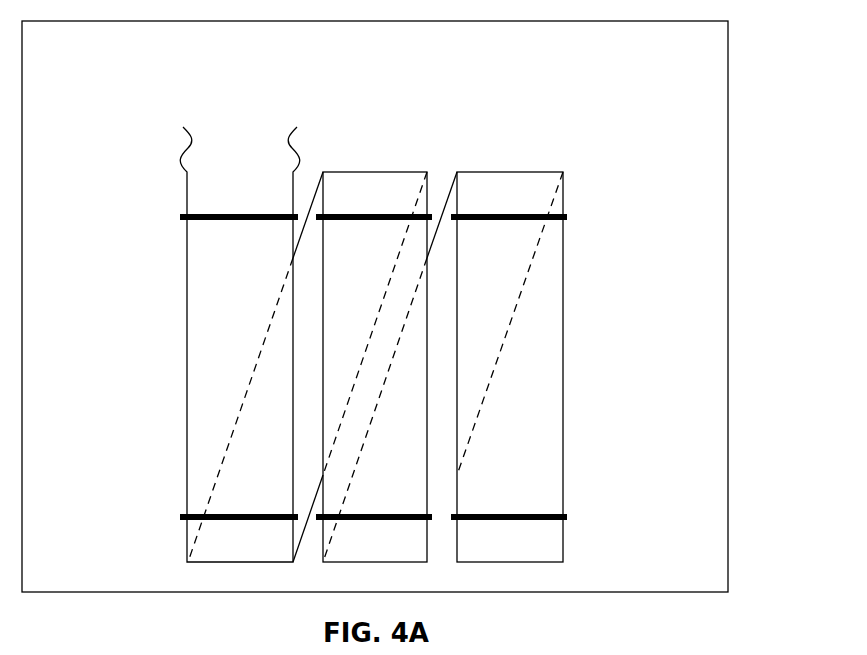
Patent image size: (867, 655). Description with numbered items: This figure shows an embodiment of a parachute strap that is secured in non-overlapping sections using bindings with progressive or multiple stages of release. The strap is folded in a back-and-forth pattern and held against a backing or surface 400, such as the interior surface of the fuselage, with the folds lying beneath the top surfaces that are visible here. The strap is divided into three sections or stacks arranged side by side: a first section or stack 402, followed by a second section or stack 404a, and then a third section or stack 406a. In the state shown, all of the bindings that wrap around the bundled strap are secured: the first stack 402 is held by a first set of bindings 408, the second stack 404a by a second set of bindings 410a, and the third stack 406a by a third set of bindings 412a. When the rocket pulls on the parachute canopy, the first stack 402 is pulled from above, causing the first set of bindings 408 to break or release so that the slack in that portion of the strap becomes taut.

The backing or surface 400 is at (728, 313).
The first section or stack 402 is at (187, 360).
The second section or stack 404a is at (345, 171).
The third section or stack 406a is at (563, 358).
The first set of bindings 408 is at (253, 214).
The second set of bindings 410a is at (388, 214).
The third set of bindings 412a is at (495, 214).